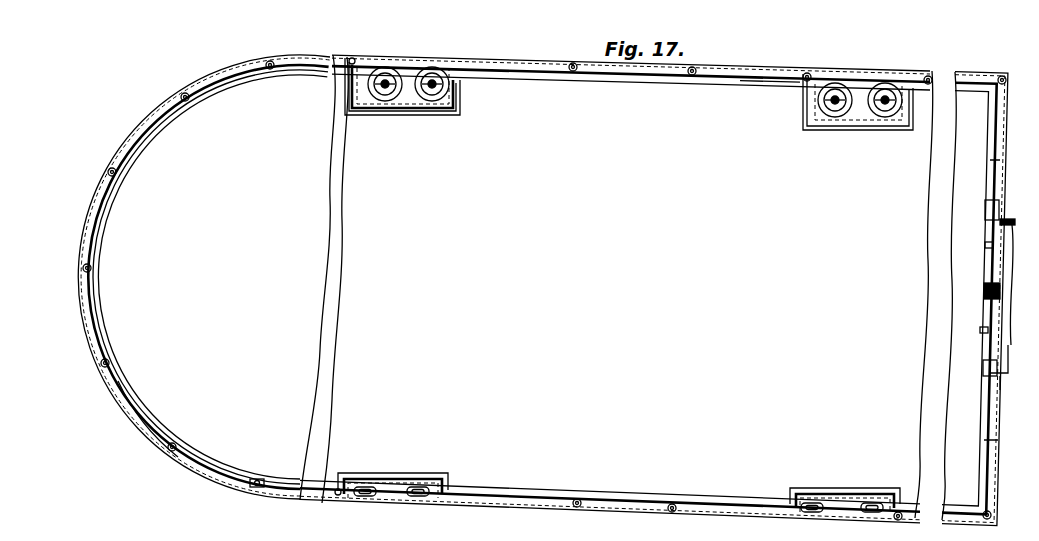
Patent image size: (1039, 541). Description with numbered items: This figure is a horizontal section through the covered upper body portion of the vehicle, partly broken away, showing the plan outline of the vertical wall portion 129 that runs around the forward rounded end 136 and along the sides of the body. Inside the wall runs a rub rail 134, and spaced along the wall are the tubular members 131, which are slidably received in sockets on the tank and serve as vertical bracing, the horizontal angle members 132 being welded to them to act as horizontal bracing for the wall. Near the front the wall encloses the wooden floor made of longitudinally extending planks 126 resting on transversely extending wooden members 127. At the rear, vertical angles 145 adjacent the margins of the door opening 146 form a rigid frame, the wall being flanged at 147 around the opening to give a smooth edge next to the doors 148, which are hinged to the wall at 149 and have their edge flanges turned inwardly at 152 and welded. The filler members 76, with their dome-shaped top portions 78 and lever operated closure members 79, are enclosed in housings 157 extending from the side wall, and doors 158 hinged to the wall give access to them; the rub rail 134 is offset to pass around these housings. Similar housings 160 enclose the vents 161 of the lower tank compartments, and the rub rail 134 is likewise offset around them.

The filler member 76 is at (436, 100).
The dome-shaped top portion 78 is at (432, 78).
The lever operated closure member 79 is at (372, 74).
The longitudinally extending plank 126 is at (1009, 372).
The transversely extending wooden member 127 is at (1019, 390).
The vertical wall portion 129 is at (768, 81).
The tubular member 131 is at (269, 69).
The horizontal angle member 132 is at (99, 229).
The rub rail 134 is at (114, 189).
The forward rounded end 136 is at (148, 438).
The vertical angle 145 is at (992, 163).
The door opening 146 is at (1001, 209).
The flange 147 is at (1012, 346).
The door 148 is at (990, 300).
The hinge 149 is at (1012, 226).
The flange 152 is at (985, 246).
The housing 157 is at (345, 92).
The door 158 is at (388, 68).
The housing 160 is at (422, 480).
The vent 161 is at (366, 487).